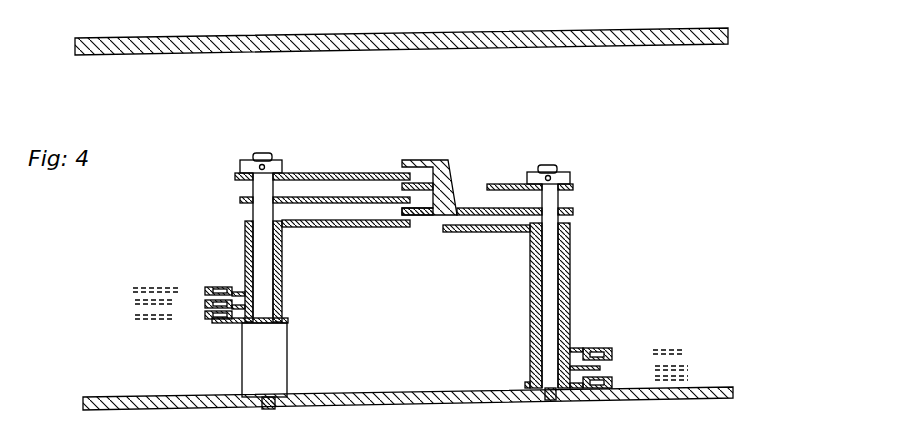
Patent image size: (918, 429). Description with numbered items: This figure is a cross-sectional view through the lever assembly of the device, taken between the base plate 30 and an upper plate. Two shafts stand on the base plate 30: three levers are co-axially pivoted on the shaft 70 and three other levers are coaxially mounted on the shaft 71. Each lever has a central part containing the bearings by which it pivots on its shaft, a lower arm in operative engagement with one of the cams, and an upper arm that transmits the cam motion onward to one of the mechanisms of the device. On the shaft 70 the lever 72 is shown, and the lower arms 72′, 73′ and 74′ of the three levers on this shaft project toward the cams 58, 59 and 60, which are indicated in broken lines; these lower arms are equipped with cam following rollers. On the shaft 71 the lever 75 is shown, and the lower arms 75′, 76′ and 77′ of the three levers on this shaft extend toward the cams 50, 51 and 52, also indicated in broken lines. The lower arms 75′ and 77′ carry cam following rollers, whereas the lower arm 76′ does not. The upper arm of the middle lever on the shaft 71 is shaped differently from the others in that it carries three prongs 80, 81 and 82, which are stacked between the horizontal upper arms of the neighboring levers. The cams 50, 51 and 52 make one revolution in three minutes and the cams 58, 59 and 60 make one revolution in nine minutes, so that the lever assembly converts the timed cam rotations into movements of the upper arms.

The base plate 30 is at (571, 29).
The shaft 70 is at (273, 139).
The shaft 71 is at (553, 165).
The lever 72 is at (284, 252).
The lever 75 is at (532, 289).
The prong 80 is at (408, 160).
The prong 81 is at (402, 188).
The prong 82 is at (402, 212).
The lower arm 72′ is at (205, 288).
The lower arm 73′ is at (205, 305).
The lower arm 74′ is at (207, 321).
The cam 58 is at (131, 289).
The cam 59 is at (135, 301).
The cam 60 is at (133, 318).
The lower arm 75′ is at (612, 352).
The lower arm 76′ is at (600, 368).
The lower arm 77′ is at (613, 385).
The cam 50 is at (685, 352).
The cam 51 is at (688, 368).
The cam 52 is at (688, 378).